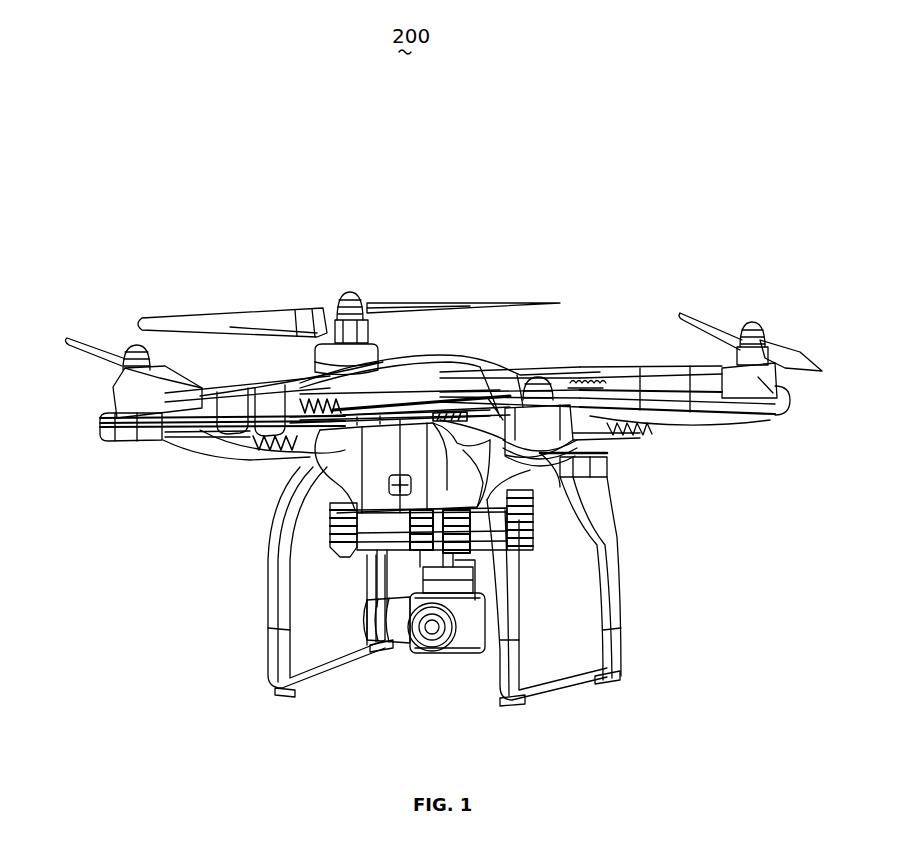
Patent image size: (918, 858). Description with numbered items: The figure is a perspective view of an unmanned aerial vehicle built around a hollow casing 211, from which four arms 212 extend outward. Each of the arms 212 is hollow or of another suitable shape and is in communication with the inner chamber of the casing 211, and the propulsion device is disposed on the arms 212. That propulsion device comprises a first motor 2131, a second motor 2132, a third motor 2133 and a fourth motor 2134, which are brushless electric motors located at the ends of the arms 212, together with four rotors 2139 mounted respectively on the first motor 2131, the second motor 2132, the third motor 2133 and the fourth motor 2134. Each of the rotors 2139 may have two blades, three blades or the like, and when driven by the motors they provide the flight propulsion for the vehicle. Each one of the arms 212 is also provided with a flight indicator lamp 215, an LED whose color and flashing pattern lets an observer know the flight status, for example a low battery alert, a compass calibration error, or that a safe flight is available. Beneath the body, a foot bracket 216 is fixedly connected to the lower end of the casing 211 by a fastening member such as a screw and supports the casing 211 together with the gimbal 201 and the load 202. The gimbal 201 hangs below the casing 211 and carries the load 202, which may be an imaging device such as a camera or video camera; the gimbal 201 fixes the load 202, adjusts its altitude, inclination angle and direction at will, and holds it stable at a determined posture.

The gimbal 201 is at (300, 507).
The load 202 is at (473, 655).
The casing 211 is at (517, 377).
The arms 212 is at (678, 432).
The flight indicator lamp 215 is at (205, 452).
The foot bracket 216 is at (613, 585).
The first motor 2131 is at (367, 345).
The second motor 2132 is at (784, 407).
The third motor 2133 is at (603, 458).
The fourth motor 2134 is at (104, 440).
The rotors 2139 is at (227, 321).